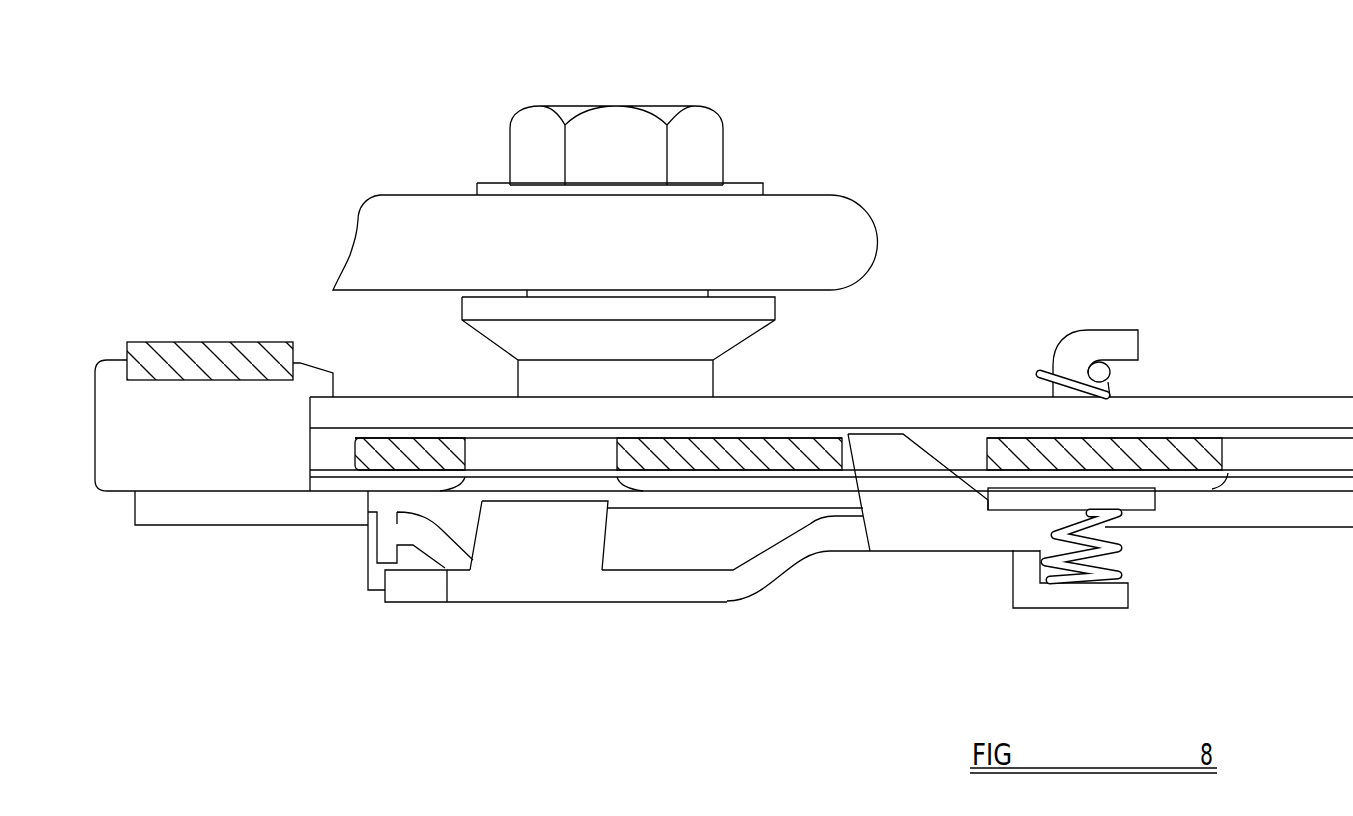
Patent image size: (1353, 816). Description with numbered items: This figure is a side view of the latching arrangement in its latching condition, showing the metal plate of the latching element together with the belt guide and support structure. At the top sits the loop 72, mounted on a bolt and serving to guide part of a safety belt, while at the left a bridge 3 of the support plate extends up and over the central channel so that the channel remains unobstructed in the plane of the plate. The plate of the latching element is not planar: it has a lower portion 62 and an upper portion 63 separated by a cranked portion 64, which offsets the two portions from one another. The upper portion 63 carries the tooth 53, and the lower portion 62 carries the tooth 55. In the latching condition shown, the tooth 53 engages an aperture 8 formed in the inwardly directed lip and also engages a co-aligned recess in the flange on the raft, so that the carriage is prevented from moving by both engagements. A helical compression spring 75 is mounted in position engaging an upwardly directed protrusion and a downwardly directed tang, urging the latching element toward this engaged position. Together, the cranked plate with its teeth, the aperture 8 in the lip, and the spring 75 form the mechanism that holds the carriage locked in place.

The bridge 3 is at (221, 362).
The aperture 8 is at (988, 510).
The tooth 53 is at (910, 466).
The tooth 55 is at (533, 535).
The lower portion 62 is at (662, 590).
The upper portion 63 is at (847, 527).
The cranked portion 64 is at (770, 563).
The loop 72 is at (412, 222).
The helical compression spring 75 is at (1130, 545).